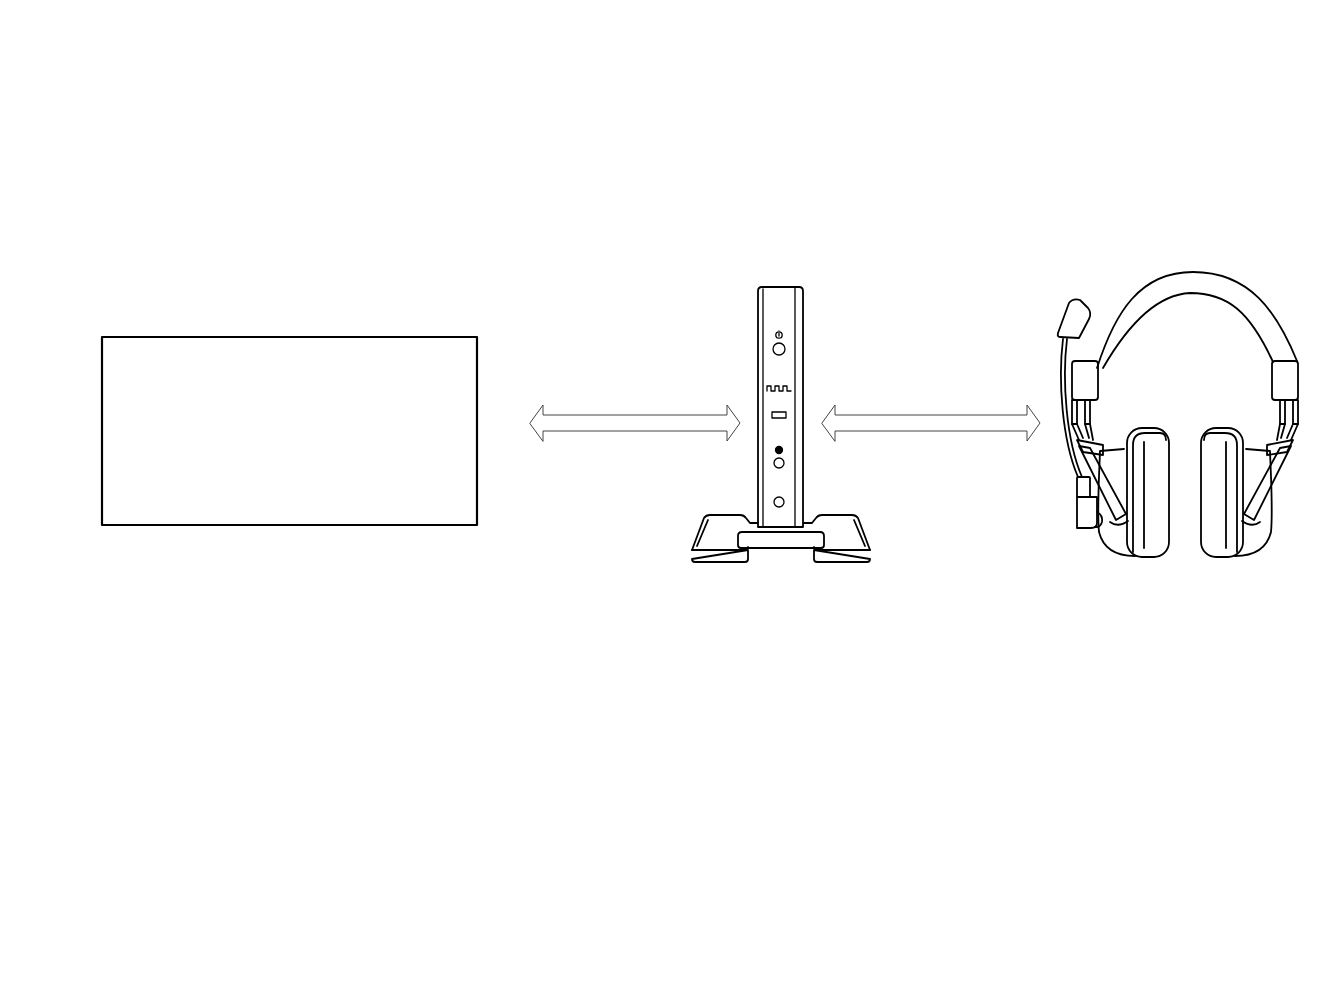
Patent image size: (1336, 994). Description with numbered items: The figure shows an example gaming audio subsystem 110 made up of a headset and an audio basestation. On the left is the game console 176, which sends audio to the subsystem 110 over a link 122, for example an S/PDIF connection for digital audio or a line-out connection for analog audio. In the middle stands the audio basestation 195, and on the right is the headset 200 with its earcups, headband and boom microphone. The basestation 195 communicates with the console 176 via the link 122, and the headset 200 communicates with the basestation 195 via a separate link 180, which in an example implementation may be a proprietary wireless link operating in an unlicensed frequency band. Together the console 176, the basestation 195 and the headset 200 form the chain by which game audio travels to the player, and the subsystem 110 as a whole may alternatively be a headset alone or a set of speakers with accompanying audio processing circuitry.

The audio subsystem 110 is at (242, 108).
The game console 176 is at (289, 431).
The link 122 is at (628, 417).
The link 180 is at (965, 418).
The audio basestation 195 is at (762, 288).
The headset 200 is at (1142, 285).